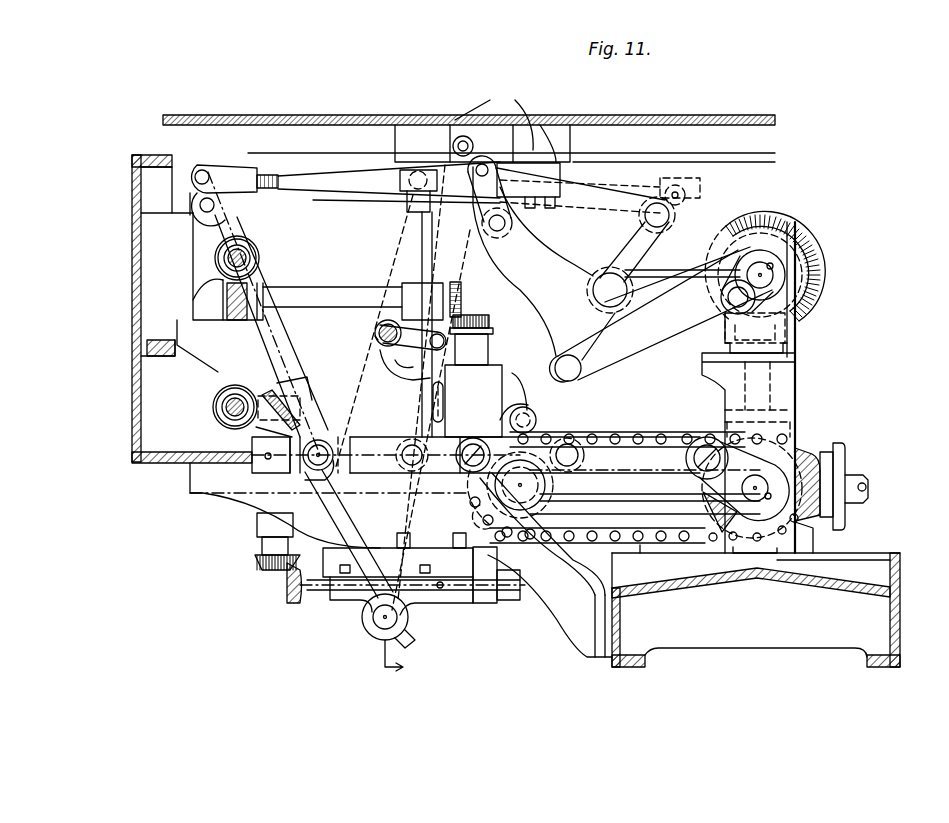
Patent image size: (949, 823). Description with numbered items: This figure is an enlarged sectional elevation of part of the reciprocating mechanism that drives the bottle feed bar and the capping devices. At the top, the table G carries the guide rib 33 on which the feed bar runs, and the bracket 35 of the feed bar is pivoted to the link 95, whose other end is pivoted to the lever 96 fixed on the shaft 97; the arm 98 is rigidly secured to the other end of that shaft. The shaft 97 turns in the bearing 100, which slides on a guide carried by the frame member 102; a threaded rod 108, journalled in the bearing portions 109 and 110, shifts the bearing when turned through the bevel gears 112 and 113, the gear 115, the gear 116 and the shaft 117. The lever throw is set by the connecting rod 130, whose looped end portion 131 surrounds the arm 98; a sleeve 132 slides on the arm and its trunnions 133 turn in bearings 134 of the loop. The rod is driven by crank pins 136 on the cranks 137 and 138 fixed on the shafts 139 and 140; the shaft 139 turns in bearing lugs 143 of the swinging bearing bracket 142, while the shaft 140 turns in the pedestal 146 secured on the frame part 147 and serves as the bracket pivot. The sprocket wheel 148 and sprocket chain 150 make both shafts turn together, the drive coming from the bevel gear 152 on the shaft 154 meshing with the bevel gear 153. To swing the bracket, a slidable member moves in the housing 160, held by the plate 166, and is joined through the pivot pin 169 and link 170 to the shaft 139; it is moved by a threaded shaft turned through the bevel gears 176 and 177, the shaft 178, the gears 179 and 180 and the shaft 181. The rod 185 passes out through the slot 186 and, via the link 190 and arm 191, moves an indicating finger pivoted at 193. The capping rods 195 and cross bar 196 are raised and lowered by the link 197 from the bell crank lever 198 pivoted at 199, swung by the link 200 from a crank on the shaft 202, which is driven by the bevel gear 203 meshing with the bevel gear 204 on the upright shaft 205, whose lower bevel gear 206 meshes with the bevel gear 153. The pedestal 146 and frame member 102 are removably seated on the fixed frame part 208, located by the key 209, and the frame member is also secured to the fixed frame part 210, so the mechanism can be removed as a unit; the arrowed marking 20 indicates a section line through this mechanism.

The table G is at (672, 115).
The frame/section line 20 is at (188, 474).
The guide rib 33 is at (511, 143).
The bracket 35 is at (400, 186).
The link 95 is at (358, 185).
The lever 96 is at (280, 322).
The shaft 97 is at (372, 630).
The arm 98 is at (330, 505).
The bearing 100 is at (418, 613).
The frame member 102 is at (375, 473).
The threaded rod 108 is at (481, 606).
The bearing portion 109 is at (522, 590).
The bearing portion 110 is at (327, 602).
The bevel gear 112 is at (287, 590).
The bevel gear 113 is at (262, 568).
The gear 115 is at (300, 398).
The gear 116 is at (235, 386).
The shaft 117 is at (222, 410).
The connecting rod 130 is at (413, 456).
The looped end portion 131 is at (396, 437).
The sleeve 132 is at (324, 440).
The trunnions 133 is at (346, 437).
The bearings 134 is at (300, 478).
The crank pins 136 is at (703, 440).
The crank 137 is at (467, 497).
The crank 138 is at (722, 497).
The shaft 139 is at (492, 518).
The crank shaft 140 is at (750, 500).
The swinging bearing bracket 142 is at (623, 478).
The bearing lugs 143 is at (565, 514).
The bearing pedestal 146 is at (815, 540).
The frame part 147 is at (833, 571).
The sprocket wheel 148 is at (565, 545).
The sprocket chain 150 is at (650, 548).
The bevel gear 152 is at (840, 462).
The bevel gear 153 is at (808, 455).
The shaft 154 is at (868, 491).
The housing 160 is at (473, 401).
The plate 166 is at (532, 379).
The pivot pin 169 is at (536, 415).
The link 170 is at (520, 410).
The bevel gear 176 is at (493, 324).
The bevel gear 177 is at (461, 299).
The shaft 178 is at (370, 287).
The gear 179 is at (230, 320).
The gear 180 is at (259, 268).
The shaft 181 is at (224, 260).
The rod 185 is at (446, 406).
The slot 186 is at (472, 349).
The link 190 is at (398, 372).
The arm 191 is at (376, 329).
The pivot 193 is at (378, 340).
The rods 195 is at (494, 116).
The cross bar 196 is at (528, 185).
The link 197 is at (514, 228).
The bell crank lever 198 is at (592, 293).
The pivot 199 is at (602, 278).
The link 200 is at (661, 314).
The shaft 202 is at (773, 275).
The bevel gear 203 is at (800, 247).
The bevel gear 204 is at (800, 330).
The upright shaft 205 is at (772, 380).
The bevel gear 206 is at (800, 415).
The fixed frame part 208 is at (756, 610).
The key 209 is at (742, 578).
The fixed frame part 210 is at (132, 417).